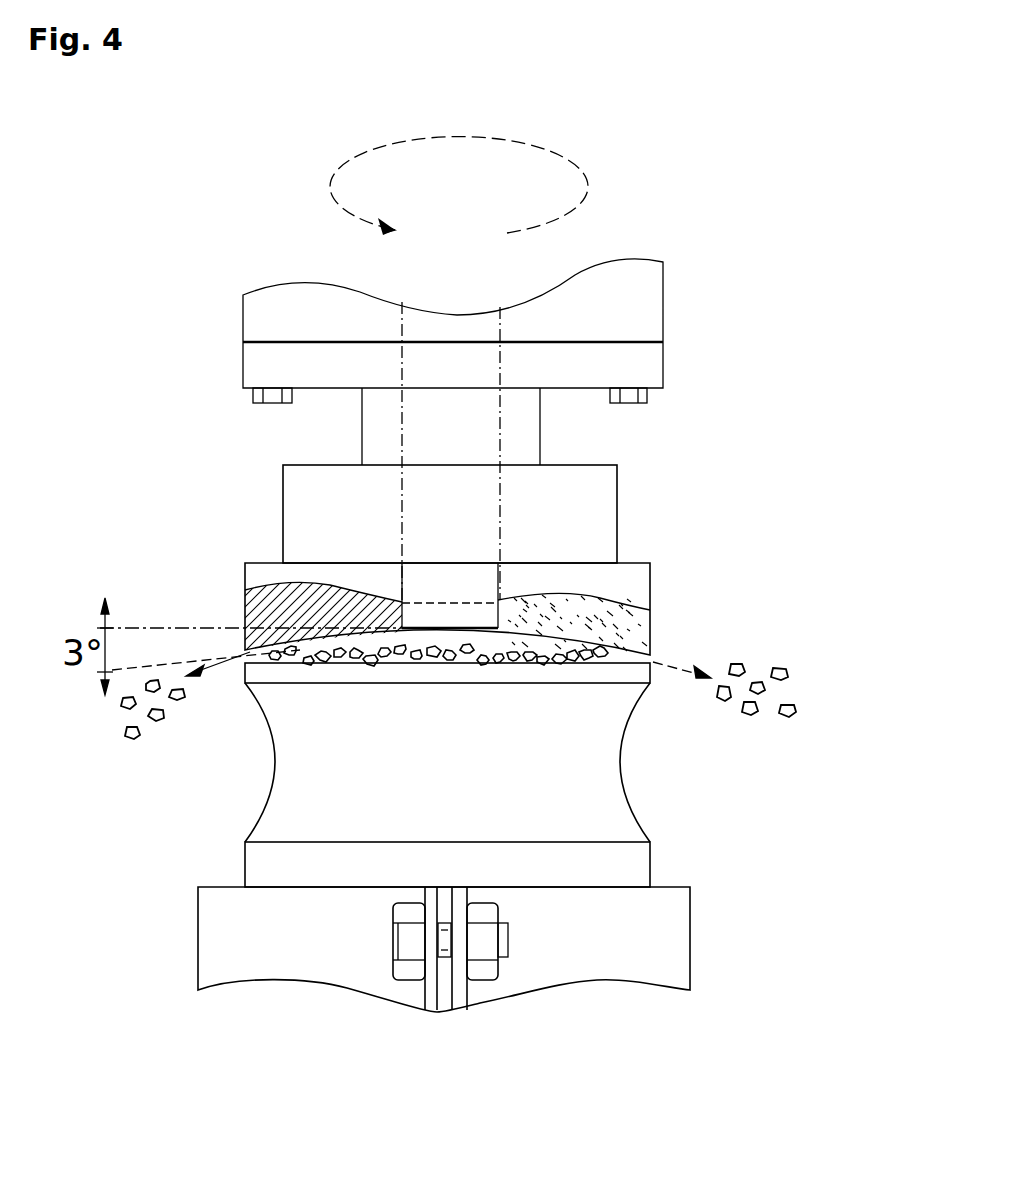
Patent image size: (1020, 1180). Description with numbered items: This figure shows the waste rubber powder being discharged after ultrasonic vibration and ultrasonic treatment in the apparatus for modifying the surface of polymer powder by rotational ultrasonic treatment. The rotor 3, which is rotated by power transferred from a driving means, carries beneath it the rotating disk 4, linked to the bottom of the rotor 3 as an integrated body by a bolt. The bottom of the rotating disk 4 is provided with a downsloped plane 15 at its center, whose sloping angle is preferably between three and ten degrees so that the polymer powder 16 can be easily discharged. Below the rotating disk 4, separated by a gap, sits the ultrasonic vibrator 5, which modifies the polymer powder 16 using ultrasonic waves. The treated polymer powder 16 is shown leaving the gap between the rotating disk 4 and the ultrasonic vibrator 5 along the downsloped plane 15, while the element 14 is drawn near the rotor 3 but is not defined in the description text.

The upper rotating head block 3 is at (678, 345).
The rotation axis of drive shaft 14 is at (402, 427).
The center axis of grinding plate 15 is at (480, 645).
The grinding plate 4 is at (662, 577).
The lower support cylinder 5 is at (598, 773).
The ejected abrasive particles 16 is at (797, 660).